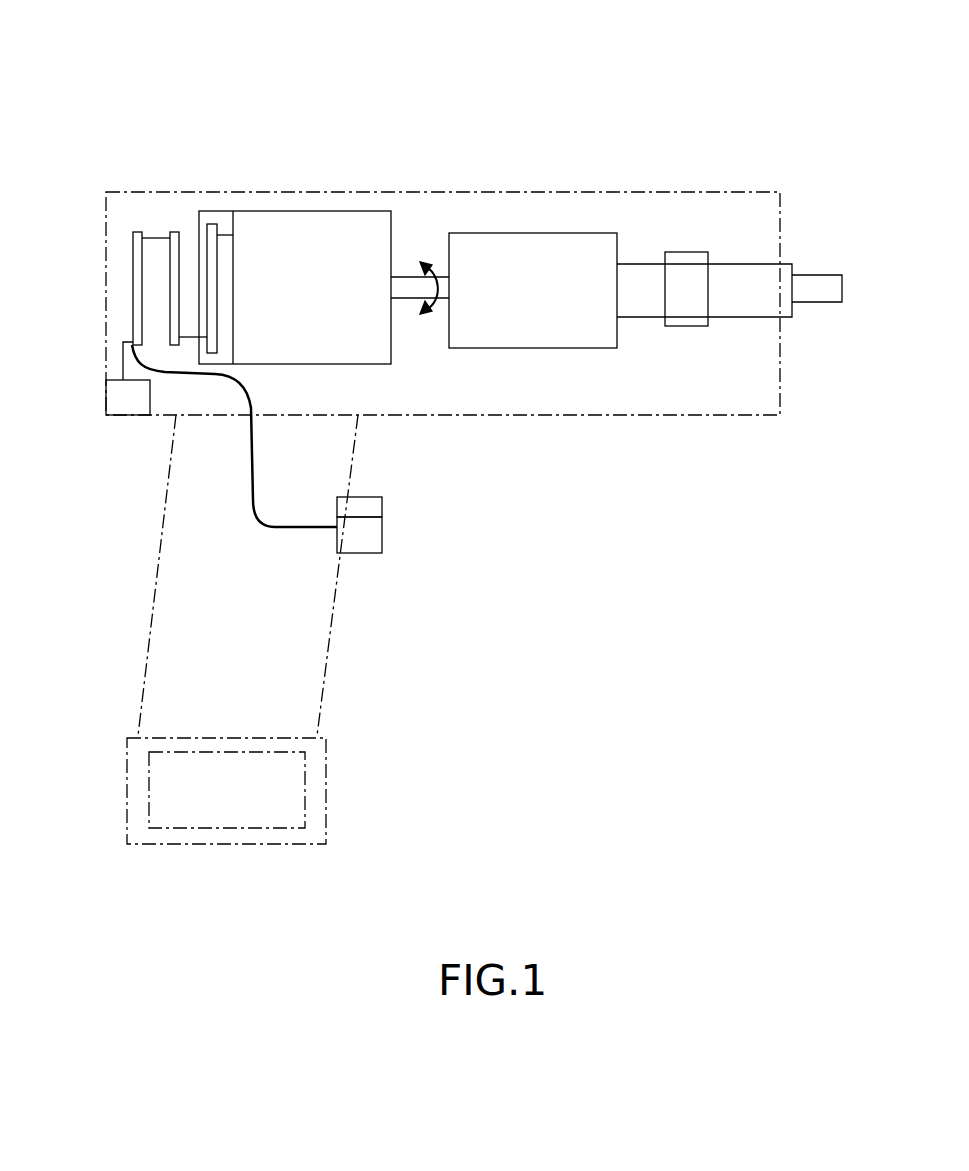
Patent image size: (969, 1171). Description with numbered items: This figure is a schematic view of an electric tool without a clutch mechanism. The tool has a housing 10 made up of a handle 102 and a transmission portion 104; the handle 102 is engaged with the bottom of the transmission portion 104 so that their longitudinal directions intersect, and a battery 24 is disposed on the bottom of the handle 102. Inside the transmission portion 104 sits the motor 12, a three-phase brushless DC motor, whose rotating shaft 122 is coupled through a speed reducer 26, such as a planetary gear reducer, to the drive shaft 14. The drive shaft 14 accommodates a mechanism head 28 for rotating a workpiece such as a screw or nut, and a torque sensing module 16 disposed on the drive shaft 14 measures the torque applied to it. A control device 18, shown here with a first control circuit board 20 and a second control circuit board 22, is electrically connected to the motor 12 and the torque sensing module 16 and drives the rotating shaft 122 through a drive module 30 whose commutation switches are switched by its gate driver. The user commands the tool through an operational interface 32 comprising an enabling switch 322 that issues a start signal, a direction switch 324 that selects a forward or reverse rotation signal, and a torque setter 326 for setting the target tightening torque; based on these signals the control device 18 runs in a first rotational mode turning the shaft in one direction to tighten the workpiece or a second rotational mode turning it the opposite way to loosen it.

The housing 10 is at (661, 194).
The handle 102 is at (533, 192).
The transmission portion 104 is at (152, 611).
The motor 12 is at (297, 240).
The rotating shaft 122 is at (407, 288).
The drive shaft 14 is at (757, 310).
The torque sensing module 16 is at (691, 313).
The control device 18 is at (179, 72).
The first control circuit board 20 is at (172, 232).
The second control circuit board 22 is at (134, 232).
The battery 24 is at (179, 806).
The speed reducer 26 is at (563, 328).
The mechanism head 28 is at (833, 287).
The drive module 30 is at (211, 224).
The operational interface 32 is at (398, 560).
The enabling switch 322 is at (378, 545).
The direction switch 324 is at (375, 507).
The torque setter 326 is at (132, 408).